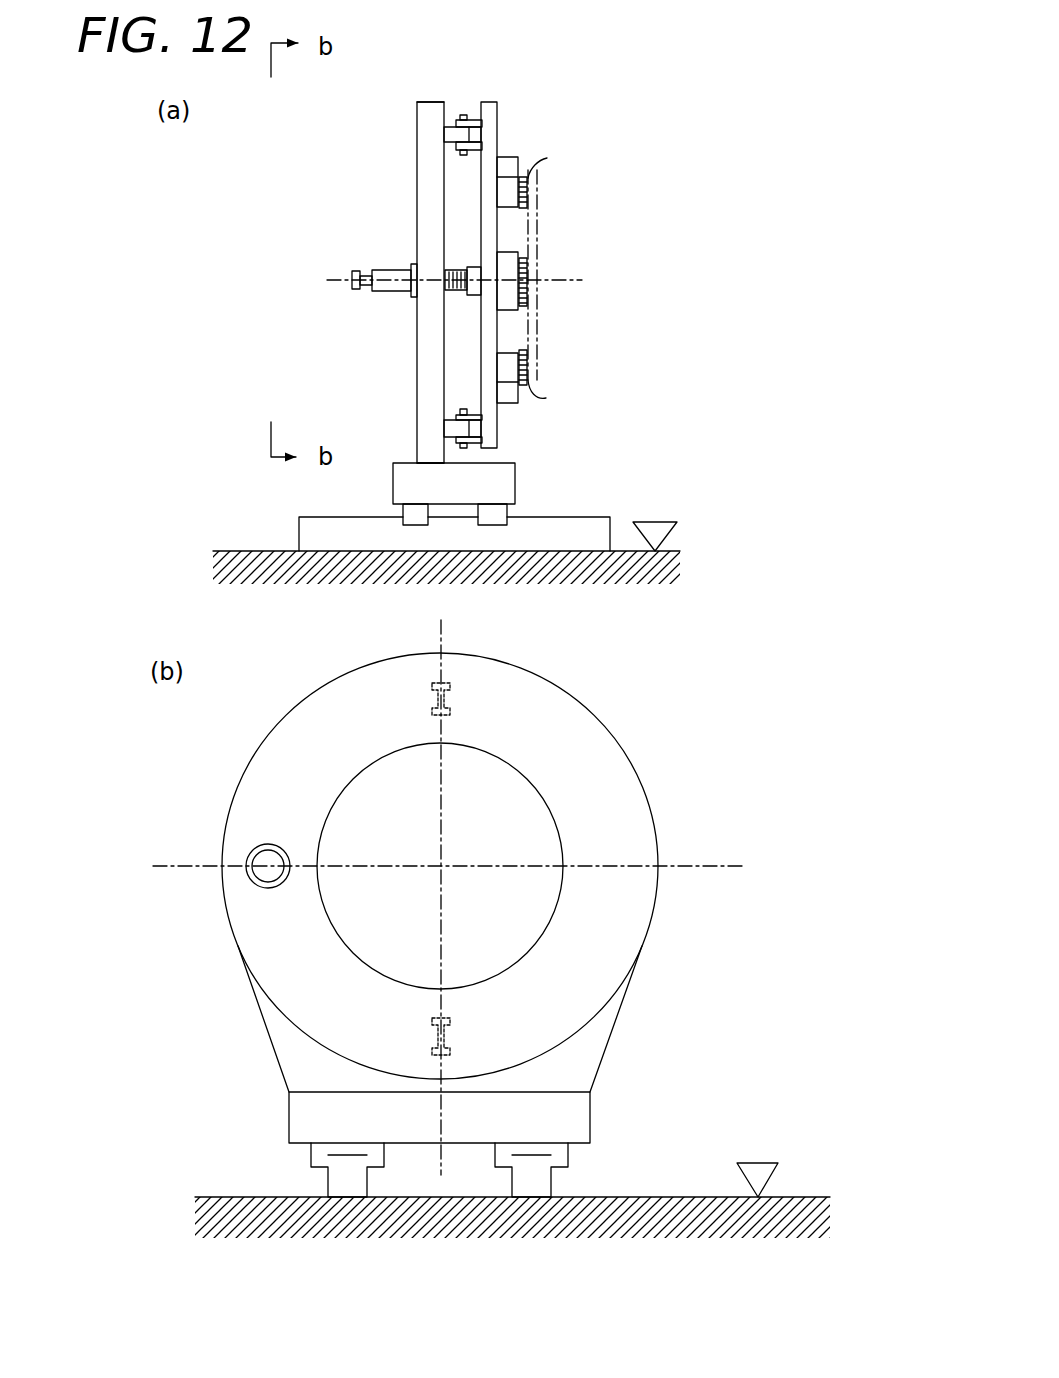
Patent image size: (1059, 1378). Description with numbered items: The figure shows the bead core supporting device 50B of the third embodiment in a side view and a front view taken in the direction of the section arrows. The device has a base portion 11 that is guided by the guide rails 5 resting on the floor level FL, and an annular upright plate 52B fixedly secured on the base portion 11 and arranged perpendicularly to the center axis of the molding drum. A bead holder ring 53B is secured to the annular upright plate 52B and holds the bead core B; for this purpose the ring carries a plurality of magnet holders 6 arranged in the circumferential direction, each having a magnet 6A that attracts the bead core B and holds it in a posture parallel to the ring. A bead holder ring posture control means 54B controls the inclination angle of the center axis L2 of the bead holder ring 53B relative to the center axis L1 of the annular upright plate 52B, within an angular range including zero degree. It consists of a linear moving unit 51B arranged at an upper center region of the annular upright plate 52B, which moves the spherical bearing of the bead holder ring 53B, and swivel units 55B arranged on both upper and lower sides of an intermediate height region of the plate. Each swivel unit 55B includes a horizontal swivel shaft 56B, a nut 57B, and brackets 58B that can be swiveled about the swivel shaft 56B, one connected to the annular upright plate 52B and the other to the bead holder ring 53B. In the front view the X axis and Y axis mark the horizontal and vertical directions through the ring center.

The bead core supporting device 50B is at (594, 117).
The annular upright plate 52B is at (418, 101).
The bead holder ring 53B is at (497, 101).
The bead holder ring posture control means 54B is at (416, 535).
The swivel unit 55B is at (451, 535).
The linear moving unit 51B is at (340, 274).
The horizontal swivel shaft 56B is at (464, 152).
The nut 57B is at (474, 114).
The bracket 58B is at (452, 133).
The magnet holder 6 is at (507, 163).
The magnet 6A is at (527, 182).
The guide rail 5 is at (322, 527).
The base portion 11 is at (399, 468).
The bead core B is at (546, 398).
The center axis of the annular upright plate L1 is at (394, 281).
The center axis of the bead holder ring L2 is at (562, 279).
The floor level FL is at (512, 872).
The X axis X is at (462, 868).
The Y axis Y is at (442, 882).